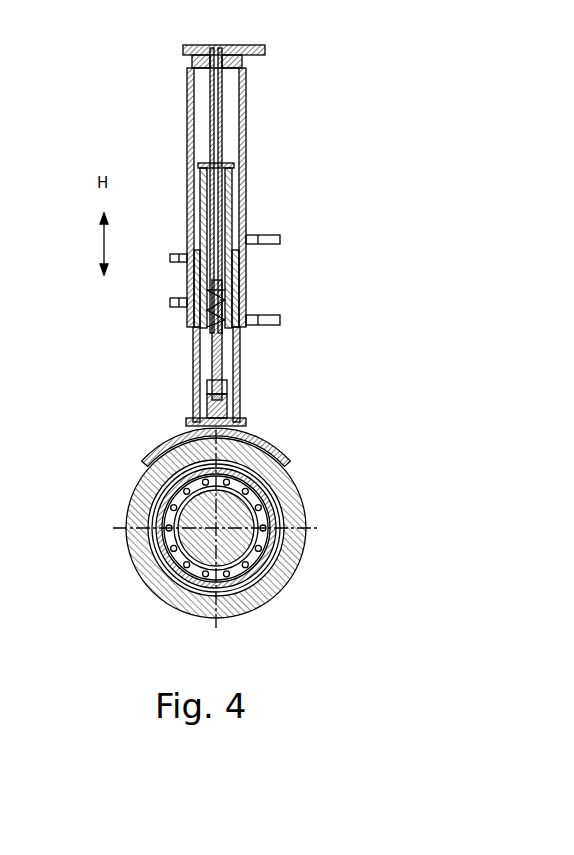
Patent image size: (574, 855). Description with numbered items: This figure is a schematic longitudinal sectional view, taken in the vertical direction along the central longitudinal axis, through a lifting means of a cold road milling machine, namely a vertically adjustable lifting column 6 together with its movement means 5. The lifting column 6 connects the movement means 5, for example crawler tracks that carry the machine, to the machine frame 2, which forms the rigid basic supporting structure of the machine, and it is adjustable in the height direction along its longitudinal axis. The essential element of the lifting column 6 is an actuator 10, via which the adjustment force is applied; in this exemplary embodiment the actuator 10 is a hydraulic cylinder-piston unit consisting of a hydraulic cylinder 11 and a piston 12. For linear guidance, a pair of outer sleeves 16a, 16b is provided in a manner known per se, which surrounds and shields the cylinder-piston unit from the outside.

The machine frame 2 is at (222, 43).
The lifting column 6 is at (287, 103).
The piston 12 is at (222, 135).
The actuator 10 is at (220, 222).
The hydraulic cylinder 11 is at (222, 327).
The outer sleeve 16a is at (188, 122).
The outer sleeve 16b is at (195, 378).
The movement means 5 is at (282, 572).